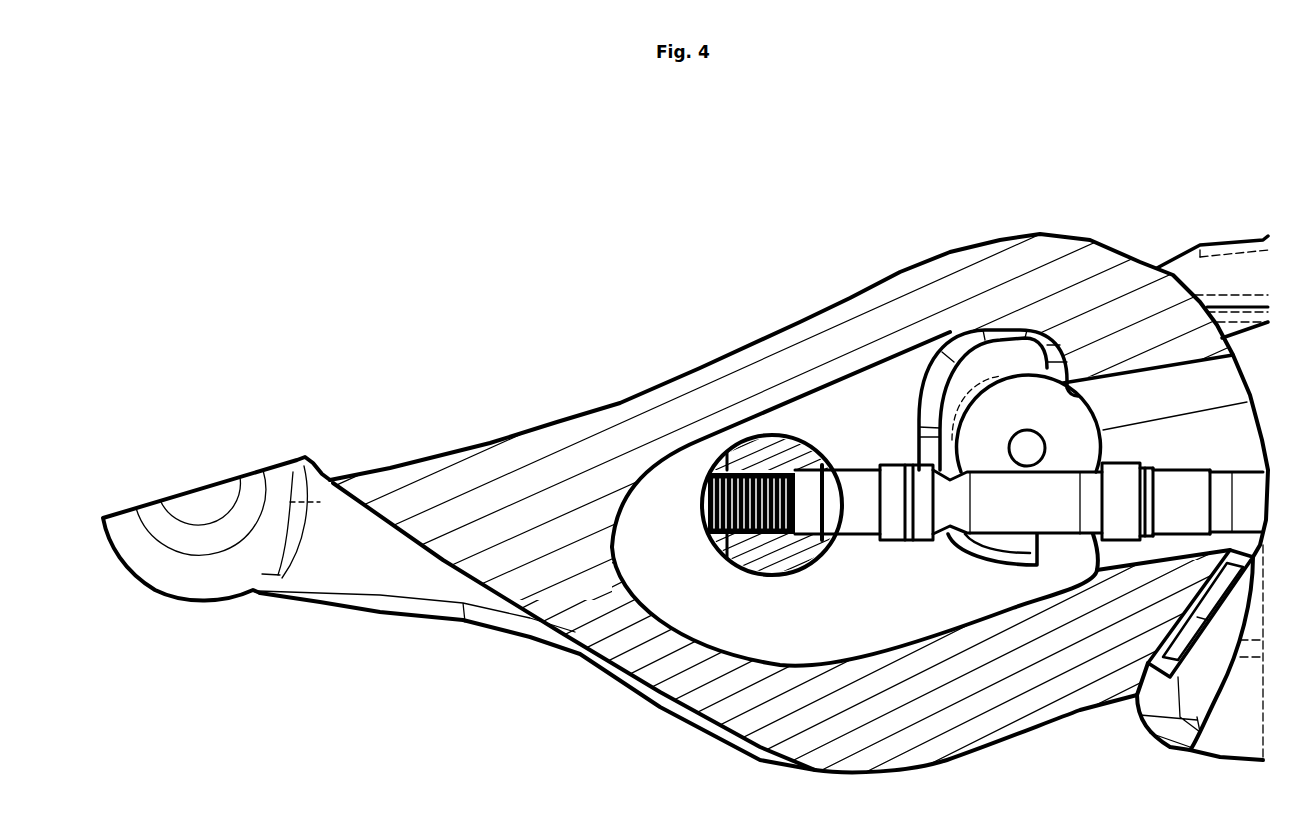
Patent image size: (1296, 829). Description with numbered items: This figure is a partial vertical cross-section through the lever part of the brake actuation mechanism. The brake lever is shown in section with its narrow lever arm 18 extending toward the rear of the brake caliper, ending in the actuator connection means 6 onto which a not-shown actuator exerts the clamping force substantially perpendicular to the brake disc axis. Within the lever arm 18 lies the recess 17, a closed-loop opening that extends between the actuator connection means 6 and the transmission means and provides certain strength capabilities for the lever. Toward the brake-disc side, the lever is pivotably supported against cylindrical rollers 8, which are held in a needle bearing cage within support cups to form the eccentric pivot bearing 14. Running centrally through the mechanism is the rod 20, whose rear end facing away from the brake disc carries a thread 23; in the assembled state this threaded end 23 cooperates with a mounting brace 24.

The actuator connection means 6 is at (190, 582).
The cylindrical rollers 8 is at (1055, 420).
The eccentric pivot bearing 14 is at (978, 296).
The recess 17 is at (705, 613).
The lever arm 18 is at (563, 467).
The rod 20 is at (858, 490).
The thread 23 is at (707, 533).
The mounting brace 24 is at (773, 457).